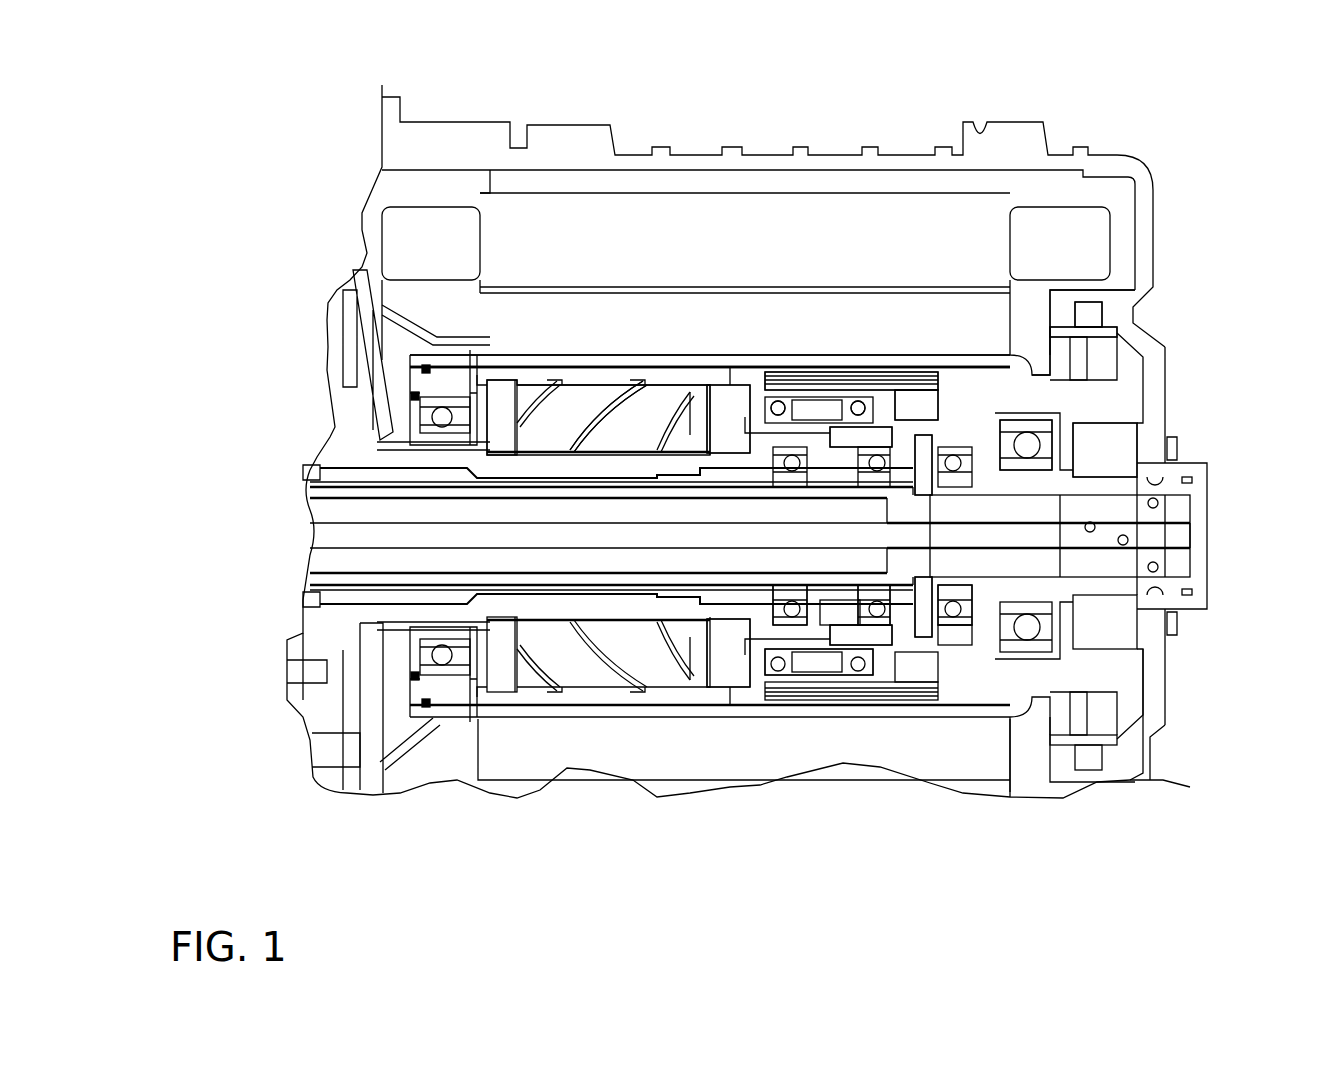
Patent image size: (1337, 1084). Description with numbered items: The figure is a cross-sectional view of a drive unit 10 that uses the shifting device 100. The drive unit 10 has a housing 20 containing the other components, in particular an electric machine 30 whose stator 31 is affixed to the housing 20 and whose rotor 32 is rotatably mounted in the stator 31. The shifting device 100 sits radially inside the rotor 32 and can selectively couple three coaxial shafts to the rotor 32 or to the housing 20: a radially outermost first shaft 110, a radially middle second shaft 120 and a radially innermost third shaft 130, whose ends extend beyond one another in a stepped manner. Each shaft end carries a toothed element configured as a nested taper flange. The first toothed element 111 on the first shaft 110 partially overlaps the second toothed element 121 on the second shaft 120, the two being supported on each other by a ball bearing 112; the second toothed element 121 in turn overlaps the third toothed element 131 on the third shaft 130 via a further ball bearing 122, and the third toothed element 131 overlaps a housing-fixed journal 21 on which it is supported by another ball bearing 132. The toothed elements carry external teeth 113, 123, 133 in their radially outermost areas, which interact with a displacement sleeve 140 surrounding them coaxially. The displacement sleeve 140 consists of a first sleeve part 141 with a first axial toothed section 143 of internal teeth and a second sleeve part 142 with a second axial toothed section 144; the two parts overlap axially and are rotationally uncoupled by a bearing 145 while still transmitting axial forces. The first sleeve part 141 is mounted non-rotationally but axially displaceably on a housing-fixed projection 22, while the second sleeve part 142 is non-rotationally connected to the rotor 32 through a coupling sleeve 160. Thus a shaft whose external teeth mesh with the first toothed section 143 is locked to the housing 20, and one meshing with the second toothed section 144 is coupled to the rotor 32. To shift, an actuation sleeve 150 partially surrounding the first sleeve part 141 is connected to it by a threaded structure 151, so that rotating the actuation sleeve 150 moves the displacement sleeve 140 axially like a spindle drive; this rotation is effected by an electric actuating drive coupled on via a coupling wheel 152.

The drive unit 10 is at (1170, 165).
The housing 20 is at (602, 142).
The housing-fixed journal 21 is at (1077, 478).
The housing-fixed projection 22 is at (402, 612).
The electric machine 30 is at (1113, 250).
The stator 31 is at (1050, 230).
The rotor 32 is at (980, 330).
The shifting device 100 is at (1103, 450).
The first shaft 110 is at (523, 587).
The first toothed element 111 is at (747, 608).
The ball bearing 112 is at (792, 607).
The external teeth 113 is at (758, 633).
The second shaft 120 is at (552, 577).
The second toothed element 121 is at (833, 612).
The ball bearing 122 is at (877, 607).
The external teeth 123 is at (852, 633).
The third shaft 130 is at (605, 558).
The third toothed element 131 is at (918, 613).
The ball bearing 132 is at (957, 607).
The external teeth 133 is at (950, 632).
The displacement sleeve 140 is at (802, 352).
The first sleeve part 141 is at (718, 405).
The second sleeve part 142 is at (883, 432).
The first axial toothed section 143 is at (908, 397).
The second axial toothed section 144 is at (925, 438).
The bearing 145 is at (778, 408).
The actuation sleeve 150 is at (532, 382).
The threaded structure 151 is at (608, 412).
The coupling wheel 152 is at (382, 360).
The coupling sleeve 160 is at (487, 360).